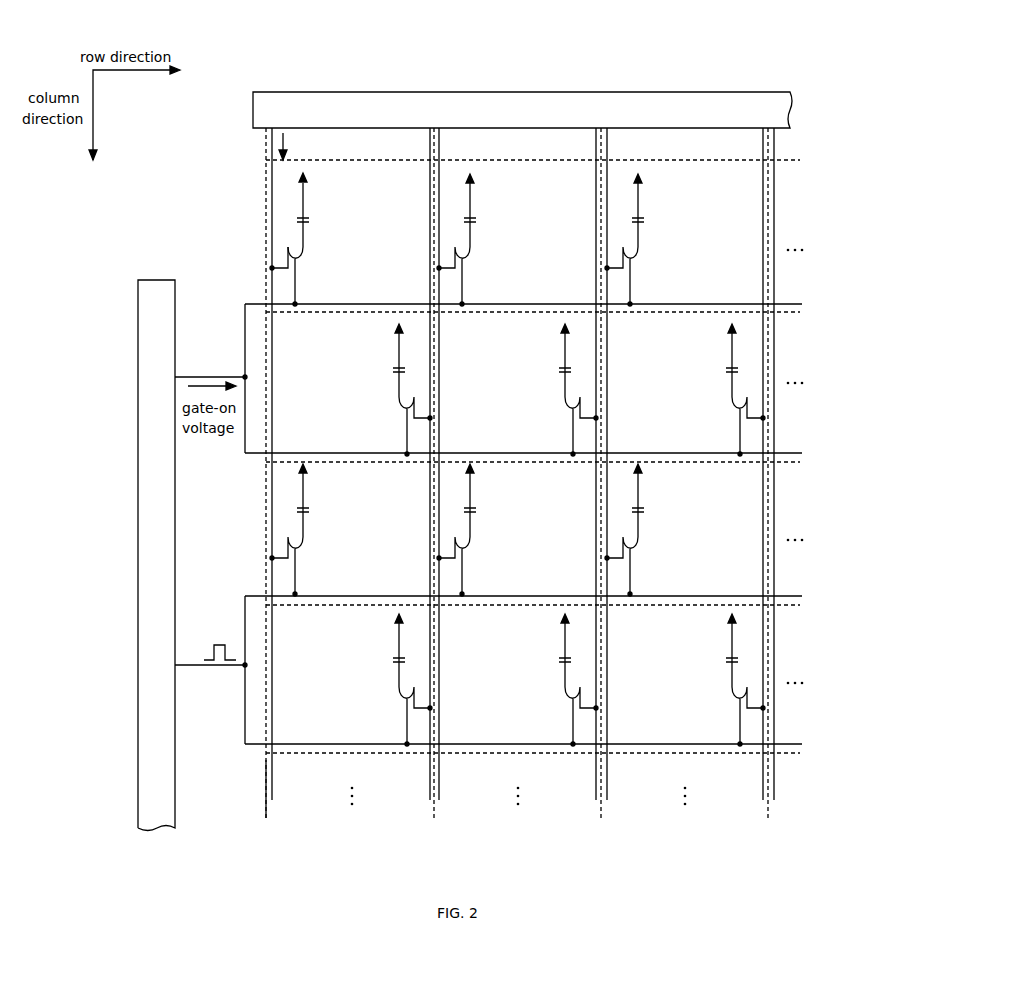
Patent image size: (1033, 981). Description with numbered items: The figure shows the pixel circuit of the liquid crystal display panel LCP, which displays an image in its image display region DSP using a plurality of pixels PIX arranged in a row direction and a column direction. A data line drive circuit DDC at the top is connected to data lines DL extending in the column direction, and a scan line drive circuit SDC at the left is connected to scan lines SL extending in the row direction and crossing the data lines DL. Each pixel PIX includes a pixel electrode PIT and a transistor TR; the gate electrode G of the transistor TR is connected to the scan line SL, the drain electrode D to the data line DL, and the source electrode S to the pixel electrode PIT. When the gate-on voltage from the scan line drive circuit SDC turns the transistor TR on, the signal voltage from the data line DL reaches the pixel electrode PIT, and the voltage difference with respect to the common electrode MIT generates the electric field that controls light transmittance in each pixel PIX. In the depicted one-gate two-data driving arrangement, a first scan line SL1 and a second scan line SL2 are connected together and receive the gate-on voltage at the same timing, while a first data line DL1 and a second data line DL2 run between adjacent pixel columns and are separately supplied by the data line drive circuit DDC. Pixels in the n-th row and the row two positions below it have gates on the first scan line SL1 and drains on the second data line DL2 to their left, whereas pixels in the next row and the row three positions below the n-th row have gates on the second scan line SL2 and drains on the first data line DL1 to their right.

The liquid crystal display panel LCP is at (548, 444).
The data line drive circuit DDC is at (285, 92).
The scan line drive circuit SDC is at (172, 280).
The pixel PIX is at (265, 160).
The common electrode MIT is at (300, 214).
The pixel electrode PIT is at (257, 383).
The transistor TR is at (257, 389).
The source electrode S is at (288, 243).
The drain electrode D is at (301, 247).
The gate electrode G is at (294, 264).
The scan line SL is at (544, 514).
The first scan line SL1 is at (793, 296).
The second scan line SL2 is at (793, 444).
The data line DL is at (540, 498).
The first data line DL1 is at (430, 798).
The second data line DL2 is at (272, 798).
The image display region DSP is at (265, 780).